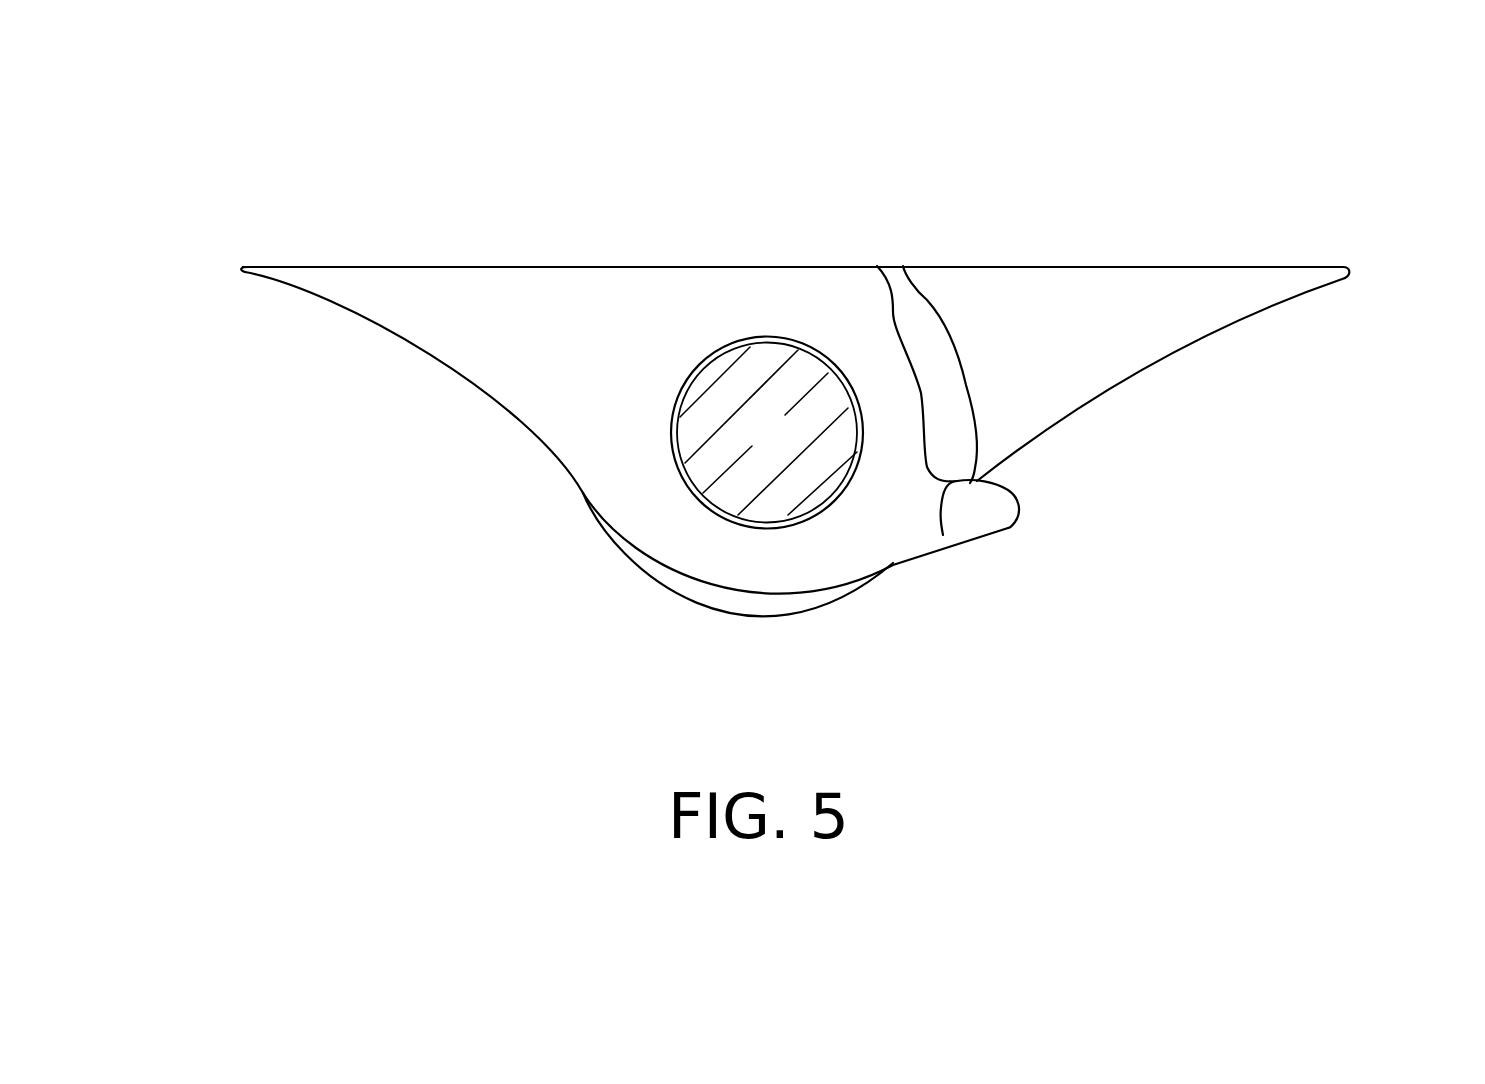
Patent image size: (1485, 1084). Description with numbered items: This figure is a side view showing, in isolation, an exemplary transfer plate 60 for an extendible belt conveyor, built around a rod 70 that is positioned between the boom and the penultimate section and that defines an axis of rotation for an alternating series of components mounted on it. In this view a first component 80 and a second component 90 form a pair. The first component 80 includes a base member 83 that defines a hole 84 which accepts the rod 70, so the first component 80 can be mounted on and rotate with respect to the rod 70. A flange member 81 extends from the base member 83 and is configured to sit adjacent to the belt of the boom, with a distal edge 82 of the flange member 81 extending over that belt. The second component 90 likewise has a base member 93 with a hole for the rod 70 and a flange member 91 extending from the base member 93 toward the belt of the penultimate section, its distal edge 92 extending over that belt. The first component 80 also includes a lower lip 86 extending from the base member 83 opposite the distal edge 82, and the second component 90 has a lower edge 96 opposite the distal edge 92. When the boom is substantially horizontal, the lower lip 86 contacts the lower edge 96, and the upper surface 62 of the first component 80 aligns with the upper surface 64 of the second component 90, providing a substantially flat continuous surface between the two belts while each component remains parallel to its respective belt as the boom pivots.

The transfer plate 60 is at (646, 119).
The upper surface 62 is at (349, 266).
The upper surface 64 is at (1140, 266).
The rod 70 is at (785, 447).
The first component 80 is at (512, 266).
The flange member 81 is at (470, 383).
The distal edge 82 is at (242, 268).
The base member 83 is at (660, 572).
The hole 84 is at (740, 340).
The lower lip 86 is at (1022, 502).
The second component 90 is at (990, 266).
The flange member 91 is at (1170, 357).
The distal edge 92 is at (1345, 274).
The base member 93 is at (780, 625).
The lower edge 96 is at (943, 535).